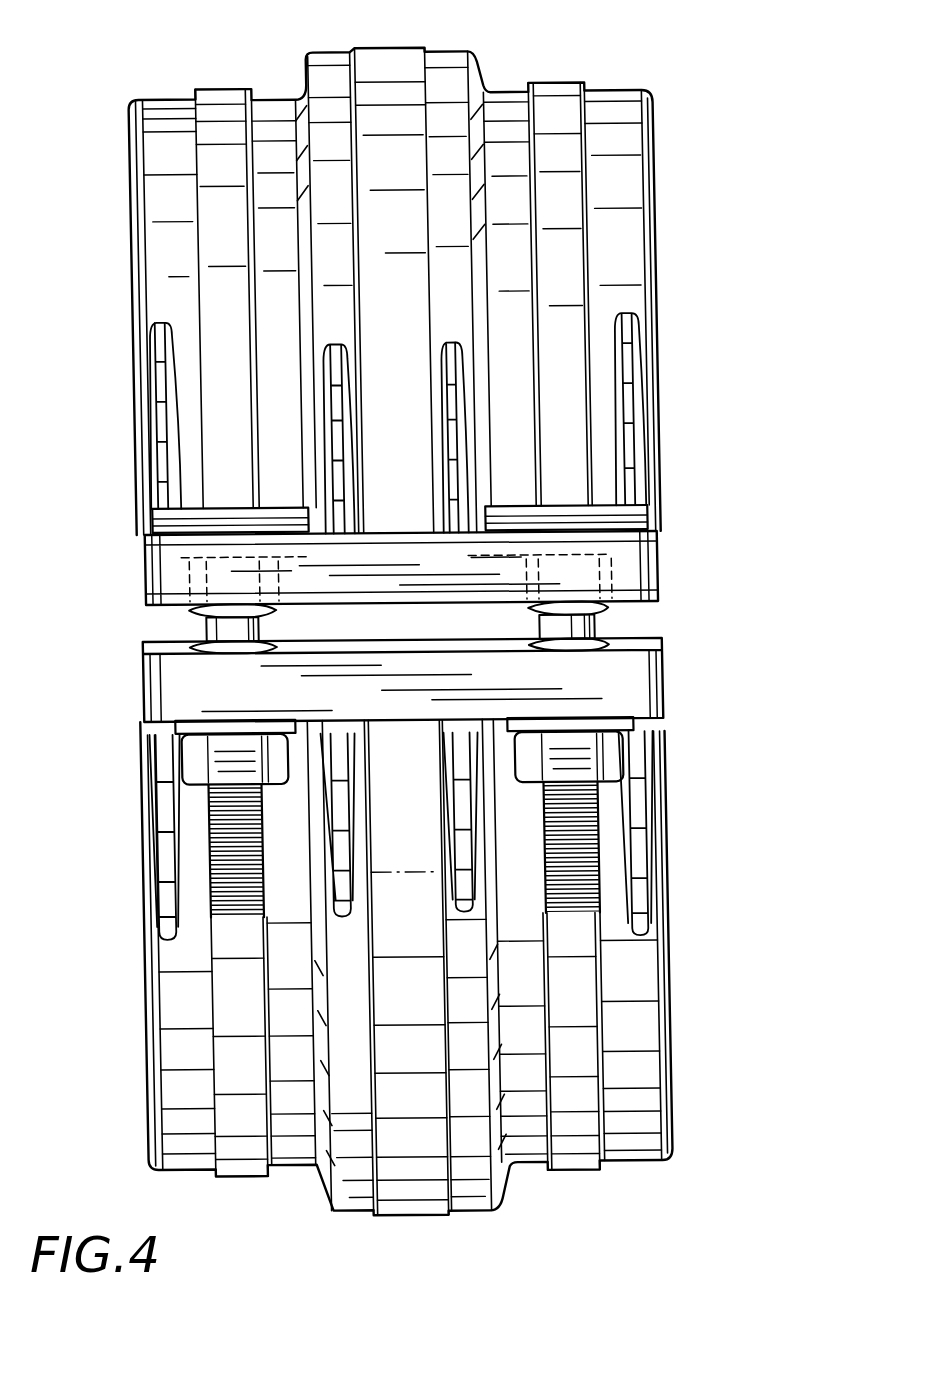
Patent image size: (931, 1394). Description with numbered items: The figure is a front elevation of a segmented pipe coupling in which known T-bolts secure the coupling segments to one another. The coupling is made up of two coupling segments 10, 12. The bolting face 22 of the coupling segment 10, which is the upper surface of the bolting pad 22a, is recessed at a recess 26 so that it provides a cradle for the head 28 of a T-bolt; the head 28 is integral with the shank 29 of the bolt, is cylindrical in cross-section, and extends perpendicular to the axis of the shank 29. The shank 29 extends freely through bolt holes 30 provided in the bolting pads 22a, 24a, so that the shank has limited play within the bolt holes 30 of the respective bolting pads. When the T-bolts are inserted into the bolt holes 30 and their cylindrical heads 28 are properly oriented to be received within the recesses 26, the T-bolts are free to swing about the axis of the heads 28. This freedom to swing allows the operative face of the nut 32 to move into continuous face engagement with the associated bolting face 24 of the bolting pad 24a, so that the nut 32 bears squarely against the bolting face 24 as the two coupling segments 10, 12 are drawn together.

The coupling segment 10 is at (507, 115).
The coupling segment 12 is at (533, 1142).
The bolting face 22 is at (188, 522).
The bolting pad 22a is at (645, 577).
The bolting face 24 is at (170, 732).
The bolting pad 24a is at (628, 688).
The recess 26 is at (142, 553).
The head 28 is at (175, 505).
The shank 29 is at (200, 620).
The bolt holes 30 is at (200, 652).
The nut 32 is at (217, 760).